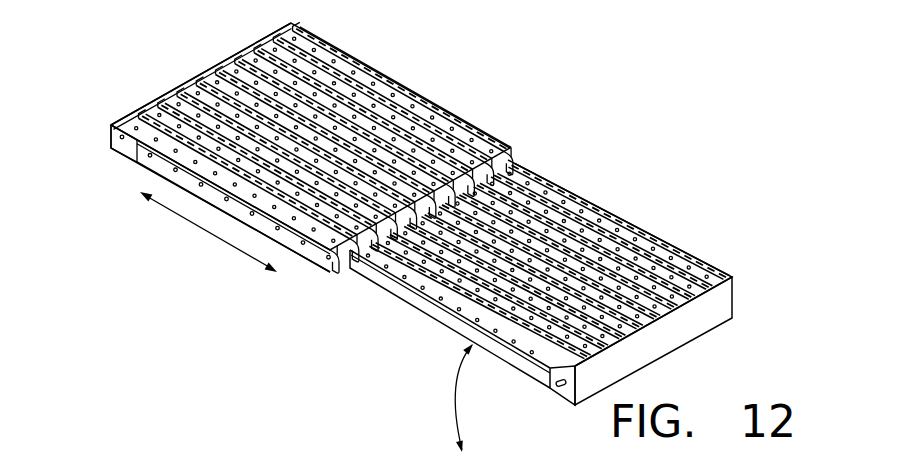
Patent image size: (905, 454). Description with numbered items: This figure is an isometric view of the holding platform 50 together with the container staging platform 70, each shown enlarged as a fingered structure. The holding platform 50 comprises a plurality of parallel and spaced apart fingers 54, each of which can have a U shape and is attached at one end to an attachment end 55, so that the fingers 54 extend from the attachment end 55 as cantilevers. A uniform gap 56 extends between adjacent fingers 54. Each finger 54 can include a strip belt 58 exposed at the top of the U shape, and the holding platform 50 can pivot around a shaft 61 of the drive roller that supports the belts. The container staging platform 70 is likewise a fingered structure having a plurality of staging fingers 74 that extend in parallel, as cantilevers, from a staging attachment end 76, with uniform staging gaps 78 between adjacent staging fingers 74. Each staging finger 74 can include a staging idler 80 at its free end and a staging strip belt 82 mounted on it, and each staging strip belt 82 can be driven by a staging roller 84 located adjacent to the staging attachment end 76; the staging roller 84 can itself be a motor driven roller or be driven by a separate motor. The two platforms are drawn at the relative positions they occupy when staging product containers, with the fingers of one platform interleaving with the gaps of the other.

The holding platform 50 is at (661, 182).
The finger 54 is at (438, 310).
The attachment end 55 is at (670, 337).
The gap 56 is at (567, 250).
The strip belt 58 is at (607, 228).
The shaft 61 is at (548, 387).
The container staging platform 70 is at (458, 68).
The staging finger 74 is at (310, 251).
The staging attachment end 76 is at (131, 113).
The staging gap 78 is at (360, 107).
The staging idler 80 is at (331, 263).
The staging strip belt 82 is at (423, 120).
The staging roller 84 is at (225, 70).